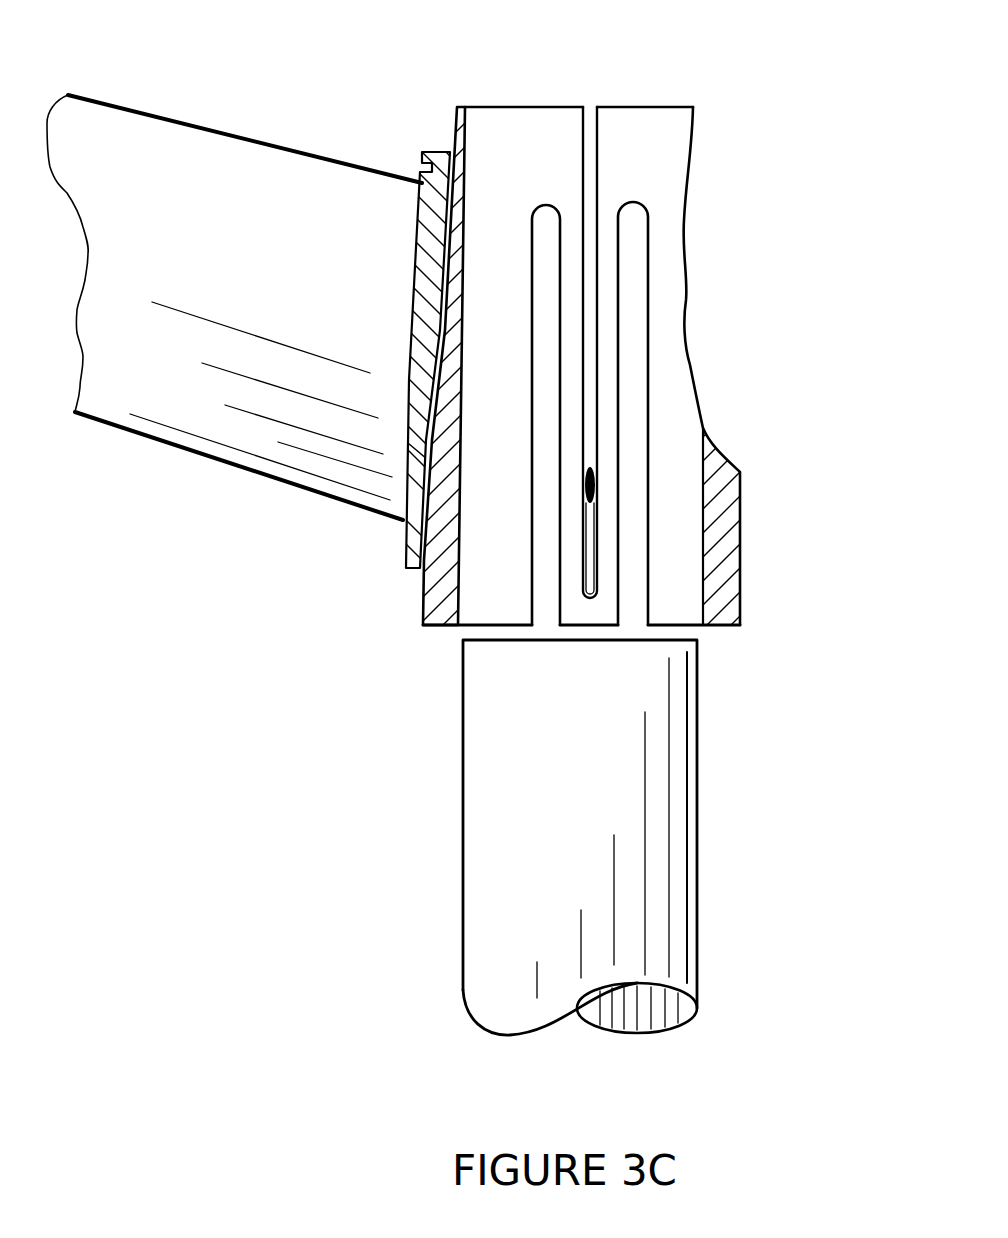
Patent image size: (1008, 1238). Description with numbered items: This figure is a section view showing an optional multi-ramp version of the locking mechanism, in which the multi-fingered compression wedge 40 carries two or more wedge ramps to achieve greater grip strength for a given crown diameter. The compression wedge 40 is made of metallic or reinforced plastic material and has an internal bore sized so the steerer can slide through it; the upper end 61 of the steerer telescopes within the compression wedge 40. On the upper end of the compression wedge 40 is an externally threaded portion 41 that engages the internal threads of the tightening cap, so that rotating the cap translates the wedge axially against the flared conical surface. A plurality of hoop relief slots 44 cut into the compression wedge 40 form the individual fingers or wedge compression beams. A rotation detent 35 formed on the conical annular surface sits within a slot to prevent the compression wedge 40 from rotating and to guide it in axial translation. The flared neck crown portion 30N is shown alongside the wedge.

The nozzle 30N is at (431, 294).
The externally threaded portion 41 is at (443, 118).
The hoop relief slots 44 is at (711, 413).
The multi-fingered compression wedge 40 is at (742, 535).
The rotation detent 35 is at (582, 497).
The upper end of steerer 61 is at (687, 847).